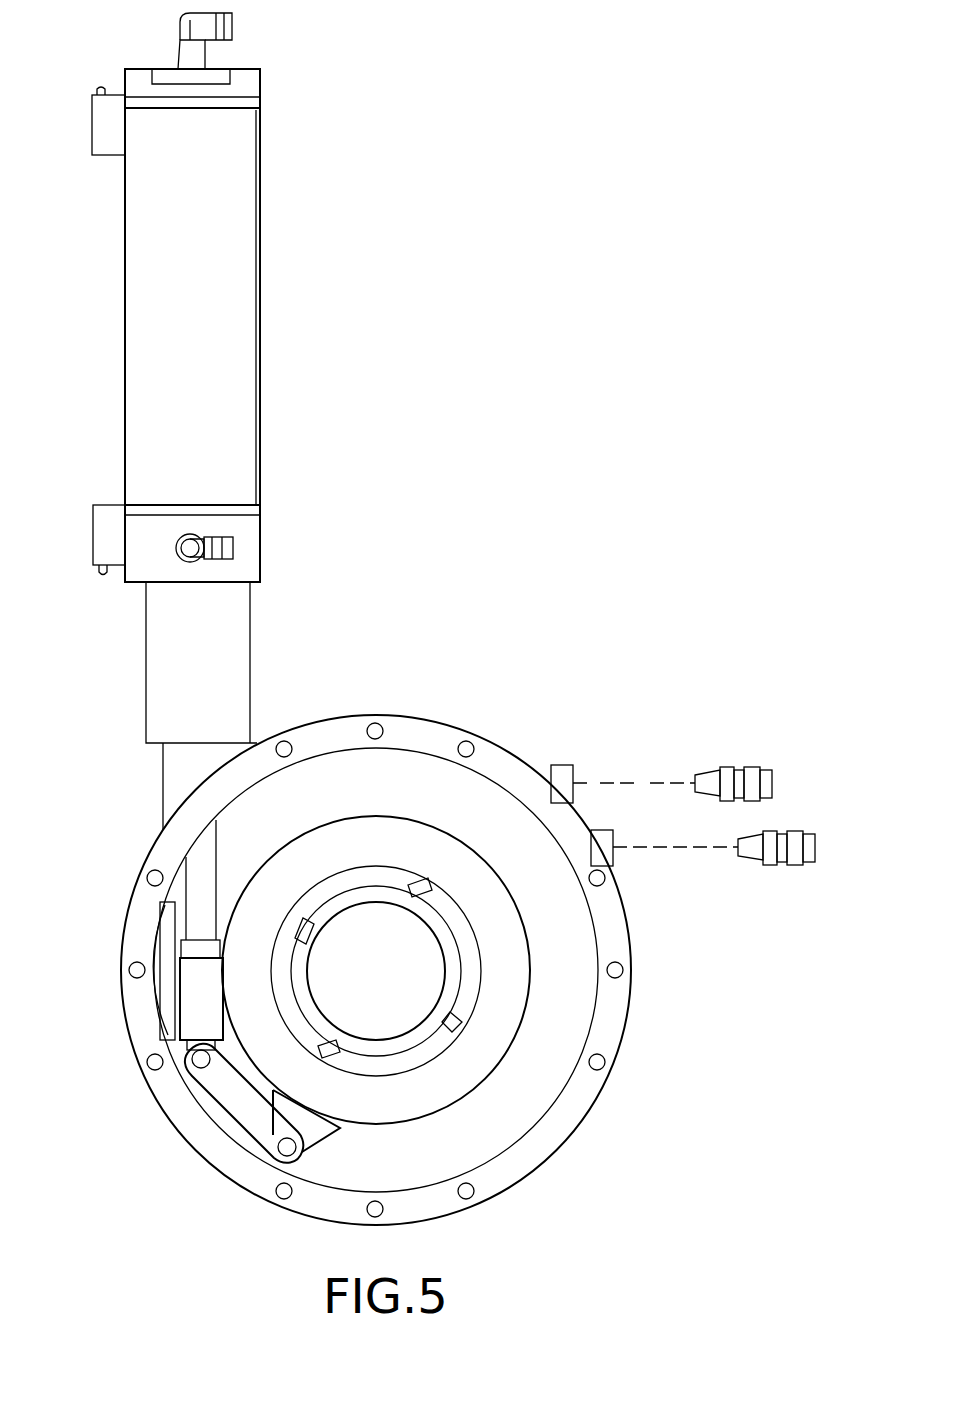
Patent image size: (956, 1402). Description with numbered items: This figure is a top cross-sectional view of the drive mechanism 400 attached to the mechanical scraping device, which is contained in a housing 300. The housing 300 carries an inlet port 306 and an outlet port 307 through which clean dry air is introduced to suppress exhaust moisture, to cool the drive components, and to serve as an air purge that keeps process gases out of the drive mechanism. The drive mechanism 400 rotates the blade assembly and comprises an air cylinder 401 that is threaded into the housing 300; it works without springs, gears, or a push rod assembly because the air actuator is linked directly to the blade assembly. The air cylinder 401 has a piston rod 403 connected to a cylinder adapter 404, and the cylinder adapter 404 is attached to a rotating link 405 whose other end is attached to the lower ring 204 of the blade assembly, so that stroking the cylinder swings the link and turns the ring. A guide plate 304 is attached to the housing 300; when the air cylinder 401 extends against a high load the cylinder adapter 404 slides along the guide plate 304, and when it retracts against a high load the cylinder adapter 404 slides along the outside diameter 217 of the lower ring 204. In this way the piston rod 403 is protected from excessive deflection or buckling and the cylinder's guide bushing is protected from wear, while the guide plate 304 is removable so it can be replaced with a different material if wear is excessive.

The drive mechanism 400 is at (300, 428).
The air cylinder 401 is at (136, 315).
The piston rod 403 is at (192, 865).
The cylinder adapter 404 is at (182, 977).
The rotating link 405 is at (217, 1078).
The guide plate 304 is at (165, 913).
The housing 300 is at (394, 712).
The lower ring 204 is at (505, 1010).
The outside diameter 217 is at (460, 835).
The inlet port 306 is at (772, 782).
The outlet port 307 is at (815, 846).